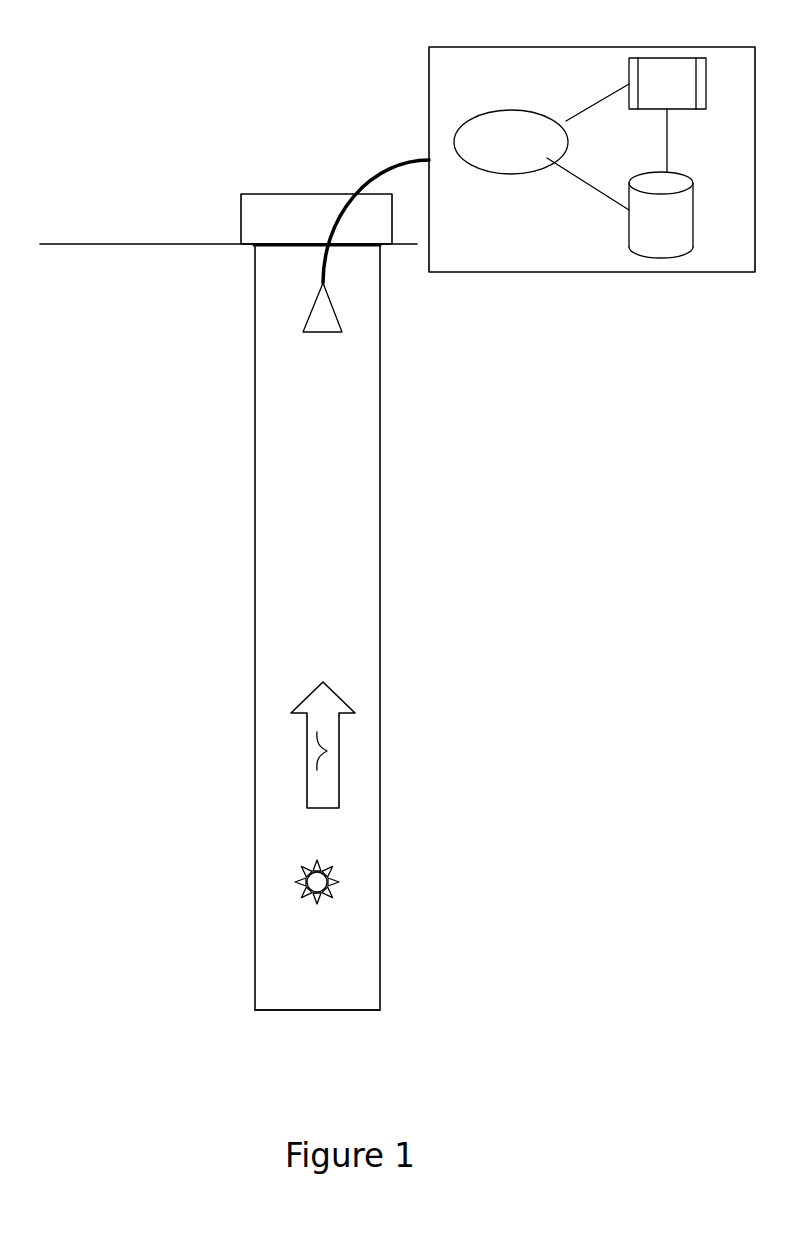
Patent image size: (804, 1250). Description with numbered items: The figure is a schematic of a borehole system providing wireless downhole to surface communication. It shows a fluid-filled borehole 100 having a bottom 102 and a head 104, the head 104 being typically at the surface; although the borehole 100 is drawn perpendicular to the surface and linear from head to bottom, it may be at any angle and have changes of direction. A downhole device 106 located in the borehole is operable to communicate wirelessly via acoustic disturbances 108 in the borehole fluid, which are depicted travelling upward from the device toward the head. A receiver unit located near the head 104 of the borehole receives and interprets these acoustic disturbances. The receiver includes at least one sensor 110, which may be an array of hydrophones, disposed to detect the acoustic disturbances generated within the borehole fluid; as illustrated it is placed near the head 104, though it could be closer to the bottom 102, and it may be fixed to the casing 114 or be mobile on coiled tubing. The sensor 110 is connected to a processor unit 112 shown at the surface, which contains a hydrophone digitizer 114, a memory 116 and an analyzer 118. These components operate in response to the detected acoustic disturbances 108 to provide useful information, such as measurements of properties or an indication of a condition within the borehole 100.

The fluid-filled borehole 100 is at (305, 546).
The bottom 102 is at (317, 1028).
The head 104 is at (302, 232).
The downhole device 106 is at (340, 882).
The acoustic disturbances 108 is at (342, 759).
The sensor 110 is at (327, 308).
The processor unit 112 is at (592, 141).
The hydrophone digitizer 114 is at (255, 410).
The memory 116 is at (670, 234).
The analyzer 118 is at (649, 95).